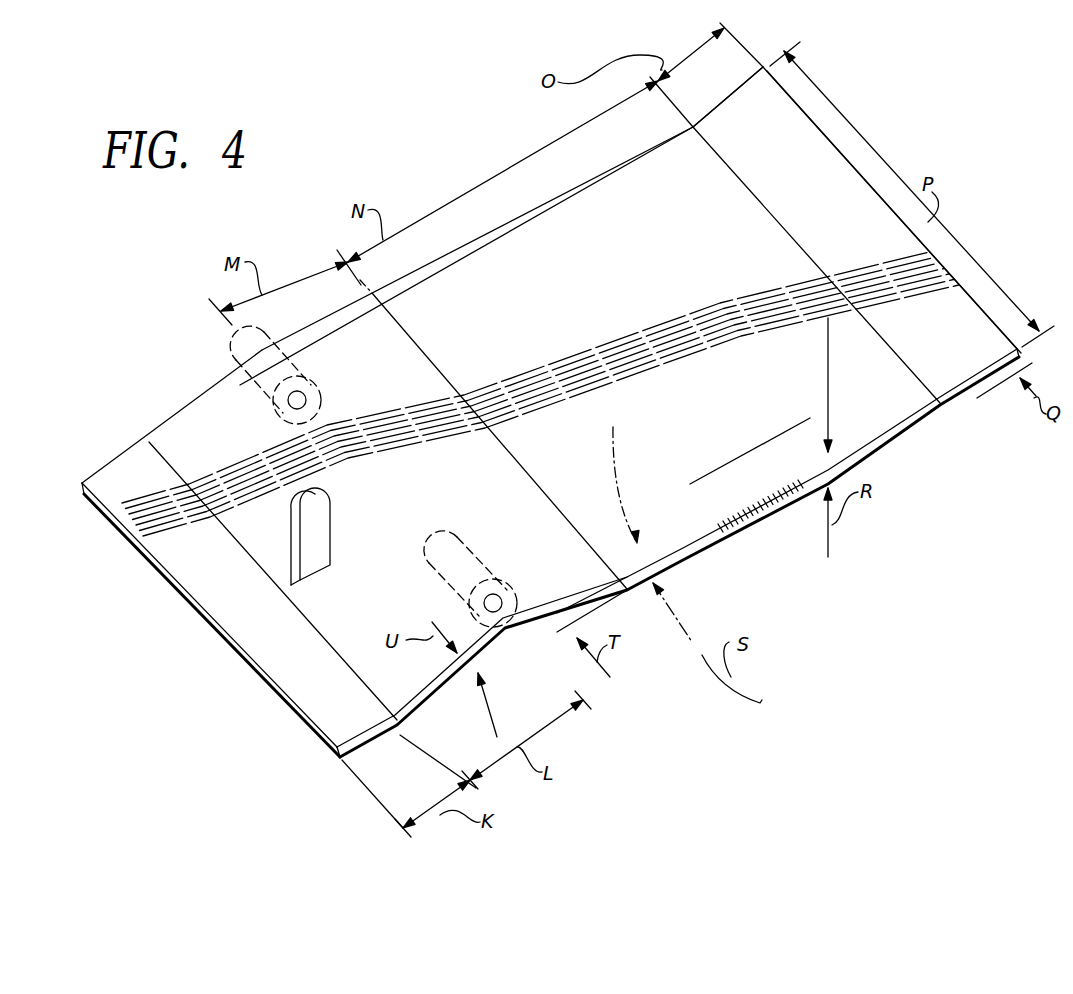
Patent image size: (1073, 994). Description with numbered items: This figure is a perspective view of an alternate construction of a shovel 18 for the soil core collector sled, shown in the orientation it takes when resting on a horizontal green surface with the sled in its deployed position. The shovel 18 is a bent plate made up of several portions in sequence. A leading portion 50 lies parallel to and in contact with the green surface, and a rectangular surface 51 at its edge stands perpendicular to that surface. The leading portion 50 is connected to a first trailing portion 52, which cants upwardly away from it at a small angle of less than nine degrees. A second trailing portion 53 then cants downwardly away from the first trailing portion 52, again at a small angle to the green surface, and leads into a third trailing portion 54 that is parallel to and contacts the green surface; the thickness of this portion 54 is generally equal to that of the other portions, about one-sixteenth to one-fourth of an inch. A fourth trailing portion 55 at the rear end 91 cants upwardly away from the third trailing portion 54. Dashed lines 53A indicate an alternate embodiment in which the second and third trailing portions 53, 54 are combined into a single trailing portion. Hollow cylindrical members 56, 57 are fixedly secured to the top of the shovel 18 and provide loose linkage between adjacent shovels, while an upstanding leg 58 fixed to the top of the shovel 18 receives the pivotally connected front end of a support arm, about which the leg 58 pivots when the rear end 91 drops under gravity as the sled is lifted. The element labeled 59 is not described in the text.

The shovel 18 is at (895, 135).
The leading portion 50 is at (265, 645).
The rectangular surface 51 is at (294, 714).
The first trailing portion 52 is at (170, 440).
The second trailing portion 53 is at (406, 373).
The dashed lines 53A is at (491, 243).
The third trailing portion 54 is at (630, 298).
The fourth trailing portion 55 is at (808, 222).
The hollow cylindrical member 56 is at (232, 353).
The hollow cylindrical member 57 is at (527, 560).
The upstanding leg 58 is at (293, 553).
The tab 59 is at (325, 522).
The rear end 91 is at (852, 172).